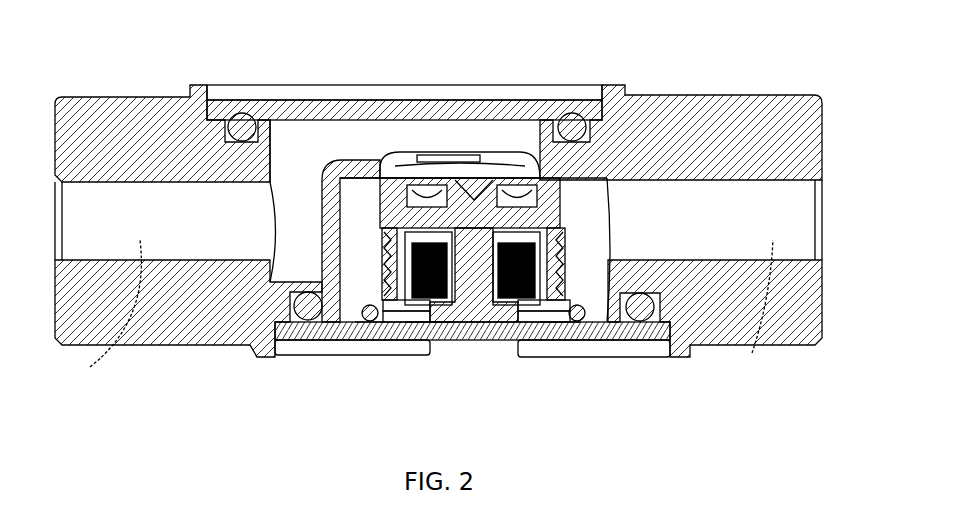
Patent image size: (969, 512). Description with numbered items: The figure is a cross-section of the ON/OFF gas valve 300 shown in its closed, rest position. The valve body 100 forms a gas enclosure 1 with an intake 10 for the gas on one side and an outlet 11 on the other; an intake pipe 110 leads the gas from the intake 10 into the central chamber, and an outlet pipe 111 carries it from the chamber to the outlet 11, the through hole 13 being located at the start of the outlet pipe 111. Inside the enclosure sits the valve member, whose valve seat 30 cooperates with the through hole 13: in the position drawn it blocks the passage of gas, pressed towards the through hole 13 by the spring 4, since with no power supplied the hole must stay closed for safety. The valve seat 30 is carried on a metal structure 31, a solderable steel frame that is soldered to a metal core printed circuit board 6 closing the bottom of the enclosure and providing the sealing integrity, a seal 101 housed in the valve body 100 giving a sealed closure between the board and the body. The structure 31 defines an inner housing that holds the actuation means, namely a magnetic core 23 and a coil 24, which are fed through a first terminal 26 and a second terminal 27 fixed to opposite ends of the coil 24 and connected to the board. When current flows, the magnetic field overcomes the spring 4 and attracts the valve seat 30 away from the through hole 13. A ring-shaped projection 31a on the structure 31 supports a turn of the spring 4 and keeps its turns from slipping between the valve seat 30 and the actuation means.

The gas enclosure 1 is at (312, 128).
The valve body 100 is at (183, 115).
The gas valve 300 is at (740, 85).
The outlet 11 is at (50, 220).
The intake 10 is at (830, 215).
The outlet pipe 111 is at (105, 318).
The intake pipe 110 is at (751, 313).
The seal 101 is at (648, 342).
The valve seat 30 is at (375, 210).
The metal structure 31 is at (545, 276).
The ring-shaped projection 31a is at (560, 258).
The through hole 13 is at (482, 158).
The spring 4 is at (382, 247).
The metal printed circuit board 6 is at (287, 357).
The magnetic core 23 is at (498, 340).
The coil 24 is at (422, 337).
The first terminal 26 is at (560, 325).
The second terminal 27 is at (358, 340).